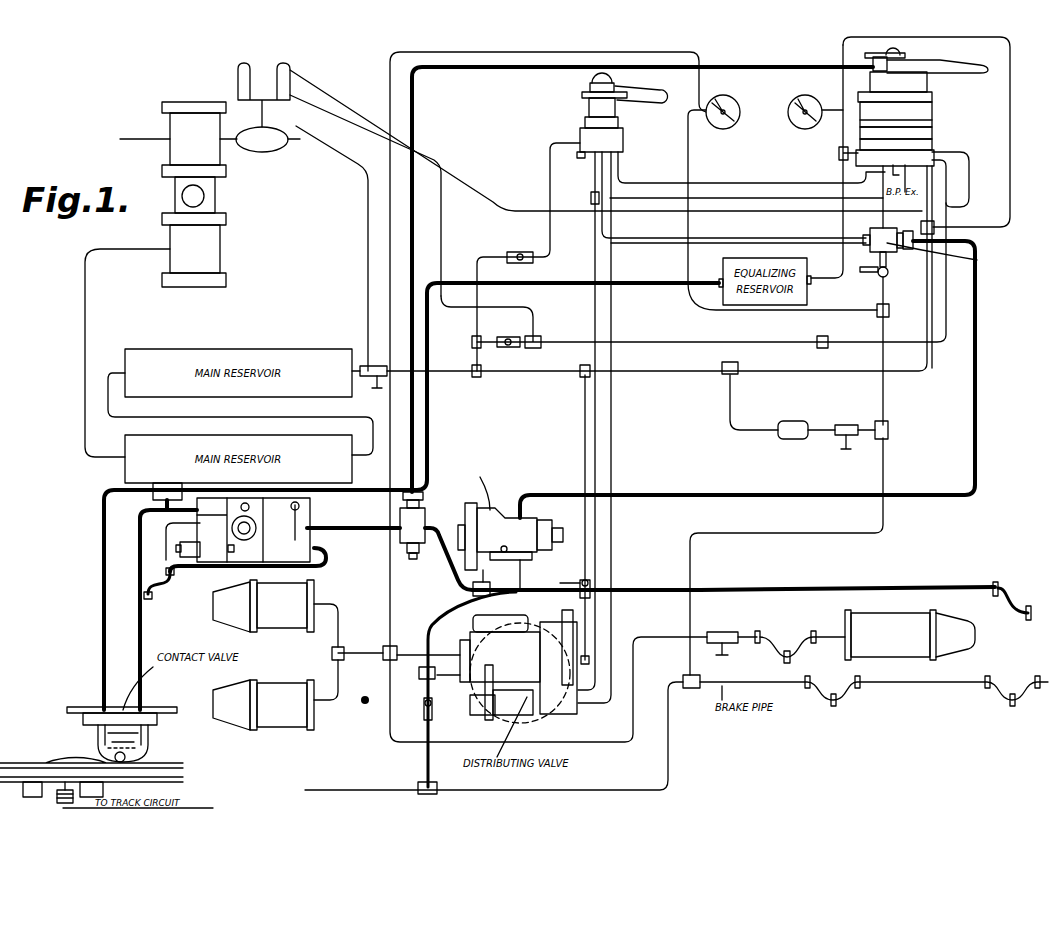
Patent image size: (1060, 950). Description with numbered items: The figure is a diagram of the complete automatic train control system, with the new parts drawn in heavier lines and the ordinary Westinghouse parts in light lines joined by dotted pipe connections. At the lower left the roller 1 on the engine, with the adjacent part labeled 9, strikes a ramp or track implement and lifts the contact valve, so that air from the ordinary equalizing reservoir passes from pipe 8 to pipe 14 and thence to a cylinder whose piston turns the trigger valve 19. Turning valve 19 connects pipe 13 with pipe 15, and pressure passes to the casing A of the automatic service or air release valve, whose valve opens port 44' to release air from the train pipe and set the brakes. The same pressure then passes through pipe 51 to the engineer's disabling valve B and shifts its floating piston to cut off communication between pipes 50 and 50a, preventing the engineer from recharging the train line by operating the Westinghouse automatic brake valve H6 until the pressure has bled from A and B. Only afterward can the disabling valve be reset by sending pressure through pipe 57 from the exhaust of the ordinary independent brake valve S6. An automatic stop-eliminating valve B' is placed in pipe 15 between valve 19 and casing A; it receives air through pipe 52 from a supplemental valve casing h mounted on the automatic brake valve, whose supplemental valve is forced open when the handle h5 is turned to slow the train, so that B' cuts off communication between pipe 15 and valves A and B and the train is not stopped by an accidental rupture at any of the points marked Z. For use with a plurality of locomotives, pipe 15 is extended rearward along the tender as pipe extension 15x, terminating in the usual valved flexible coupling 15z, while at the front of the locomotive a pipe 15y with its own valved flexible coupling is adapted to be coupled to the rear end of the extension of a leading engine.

The roller 1 is at (128, 761).
The contact roller / track contact 9 is at (100, 743).
The pipe 8 is at (668, 285).
The pipe 13 is at (173, 549).
The pipe 14 is at (140, 605).
The pipe 15 is at (325, 540).
The pipe extension 15x is at (975, 570).
The pipe 15y is at (150, 577).
The valved flexible coupling 15z is at (1015, 598).
The valve 19 is at (233, 530).
The port 44' is at (540, 526).
The pipe 50 is at (883, 220).
The pipe 50a is at (884, 289).
The pipe 51 is at (765, 487).
The pipe 52 is at (413, 247).
The pipe 57 is at (665, 243).
The casing of automatic air release valve A is at (480, 520).
The engineer's disabling valve B is at (884, 270).
The automatic stop-eliminating valve B' is at (371, 543).
The automatic brake valve H6 is at (873, 113).
The independent brake valve S6 is at (580, 140).
The supplemental valve casing h is at (873, 62).
The handle h5 is at (971, 70).
The rupture points Z is at (758, 250).